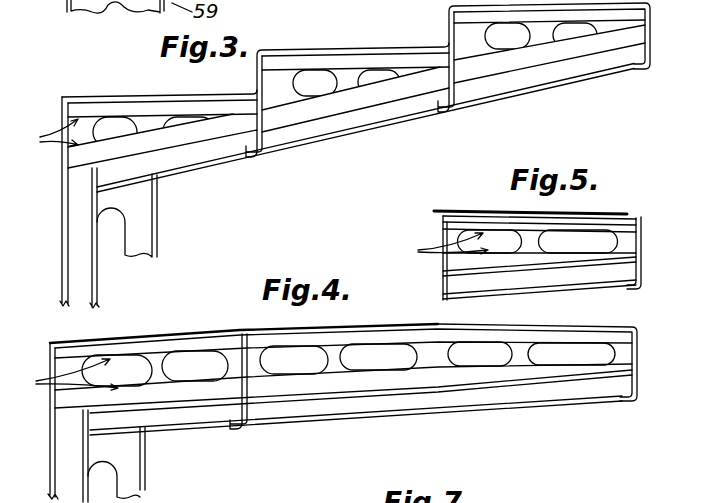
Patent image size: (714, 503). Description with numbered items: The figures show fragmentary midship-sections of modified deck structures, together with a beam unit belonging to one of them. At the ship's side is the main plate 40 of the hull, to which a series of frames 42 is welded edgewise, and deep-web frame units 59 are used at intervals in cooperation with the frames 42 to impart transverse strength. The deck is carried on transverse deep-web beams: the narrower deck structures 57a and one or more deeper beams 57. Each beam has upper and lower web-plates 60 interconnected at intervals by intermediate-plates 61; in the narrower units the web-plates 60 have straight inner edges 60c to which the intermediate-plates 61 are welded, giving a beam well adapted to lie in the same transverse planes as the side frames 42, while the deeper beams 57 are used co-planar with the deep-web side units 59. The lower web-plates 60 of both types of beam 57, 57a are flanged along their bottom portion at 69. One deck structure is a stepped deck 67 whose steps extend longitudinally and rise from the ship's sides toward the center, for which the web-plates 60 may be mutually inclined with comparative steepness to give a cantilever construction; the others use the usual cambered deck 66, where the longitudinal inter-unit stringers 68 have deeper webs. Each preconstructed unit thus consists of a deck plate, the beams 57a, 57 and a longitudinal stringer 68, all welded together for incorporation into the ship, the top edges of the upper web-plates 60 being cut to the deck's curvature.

In FIG. 3, the main plate 40 is at (62, 221).
In FIG. 4, the main plate 40 is at (50, 467).
In FIG. 3, the frames 42 is at (80, 285).
In FIG. 4, the frames 42 is at (72, 482).
In FIG. 3, the deep-web beam units 57 is at (366, 134).
In FIG. 4, the deep-web beam units 57 is at (333, 424).
In FIG. 5, the deep-web beam units 57 is at (601, 288).
In FIG. 3, the deck structures 57a is at (313, 128).
In FIG. 4, the deck structures 57a is at (383, 399).
In FIG. 5, the deck structures 57a is at (464, 277).
In FIG. 3, the deep-web frame units 59 is at (158, 223).
In FIG. 4, the deep-web frame units 59 is at (154, 454).
In FIG. 3, the web-plates 60 is at (137, 143).
In FIG. 4, the web-plates 60 is at (199, 389).
In FIG. 5, the web-plates 60 is at (587, 254).
In FIG. 3, the straight inner edges 60c is at (43, 142).
In FIG. 4, the straight inner edges 60c is at (61, 386).
In FIG. 5, the straight inner edges 60c is at (439, 253).
In FIG. 3, the intermediate-plates 61 is at (153, 123).
In FIG. 4, the intermediate-plates 61 is at (155, 357).
In FIG. 5, the intermediate-plates 61 is at (530, 245).
In FIG. 4, the cambered deck 66 is at (383, 322).
In FIG. 5, the cambered deck 66 is at (478, 208).
In FIG. 3, the stepped deck 67 is at (391, 47).
In FIG. 3, the longitudinal inter-unit stringers 68 is at (266, 145).
In FIG. 4, the longitudinal inter-unit stringers 68 is at (250, 417).
In FIG. 5, the longitudinal inter-unit stringers 68 is at (641, 259).
In FIG. 3, the flange 69 is at (404, 117).
In FIG. 4, the flange 69 is at (490, 384).